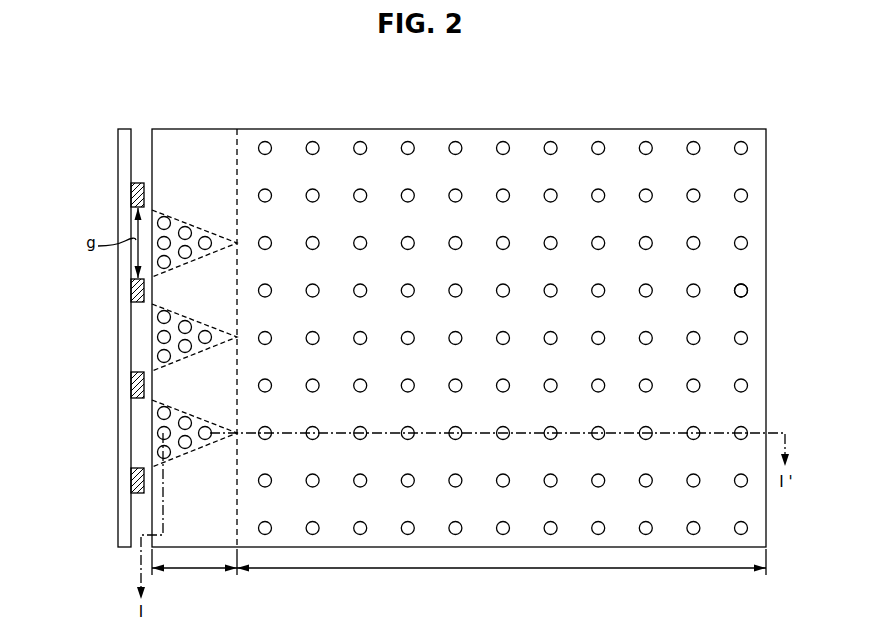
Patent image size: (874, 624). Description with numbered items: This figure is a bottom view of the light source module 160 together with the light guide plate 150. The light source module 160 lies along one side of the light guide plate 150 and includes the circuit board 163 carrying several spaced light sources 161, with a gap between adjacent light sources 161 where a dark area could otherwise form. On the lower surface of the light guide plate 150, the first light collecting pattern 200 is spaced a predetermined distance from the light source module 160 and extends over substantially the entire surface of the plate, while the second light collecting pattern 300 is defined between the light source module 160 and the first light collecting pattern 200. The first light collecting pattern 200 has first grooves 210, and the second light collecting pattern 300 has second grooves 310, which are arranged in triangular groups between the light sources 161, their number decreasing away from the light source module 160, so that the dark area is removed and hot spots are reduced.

The light guide plate 150 is at (708, 116).
The first groove 210 is at (747, 290).
The second groove 310 is at (184, 228).
The light source module 160 is at (83, 338).
The circuit board 163 is at (118, 331).
The light source 161 is at (67, 330).
The second light collecting pattern 300 is at (194, 570).
The first light collecting pattern 200 is at (501, 570).